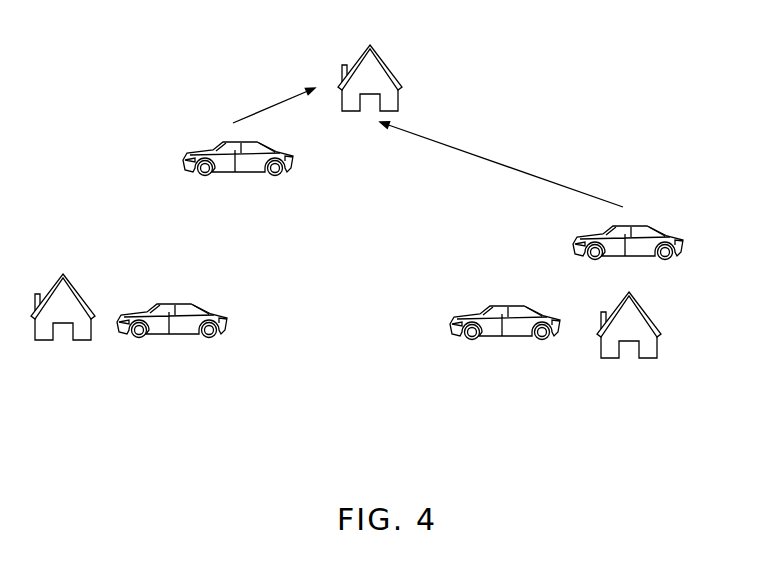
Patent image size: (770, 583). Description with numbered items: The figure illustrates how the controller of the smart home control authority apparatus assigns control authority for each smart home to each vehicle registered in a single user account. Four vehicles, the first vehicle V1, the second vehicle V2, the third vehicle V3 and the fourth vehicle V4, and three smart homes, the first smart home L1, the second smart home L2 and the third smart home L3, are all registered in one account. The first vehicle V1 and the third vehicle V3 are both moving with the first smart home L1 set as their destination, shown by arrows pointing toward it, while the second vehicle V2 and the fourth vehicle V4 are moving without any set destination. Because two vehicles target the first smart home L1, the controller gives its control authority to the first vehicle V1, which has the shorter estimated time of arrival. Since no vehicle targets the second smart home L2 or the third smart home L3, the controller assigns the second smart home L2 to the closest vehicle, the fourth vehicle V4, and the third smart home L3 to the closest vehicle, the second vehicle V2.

The first smart home L1 is at (394, 78).
The second smart home L2 is at (63, 332).
The third smart home L3 is at (629, 342).
The first vehicle V1 is at (238, 175).
The second vehicle V2 is at (505, 340).
The third vehicle V3 is at (648, 243).
The fourth vehicle V4 is at (172, 339).